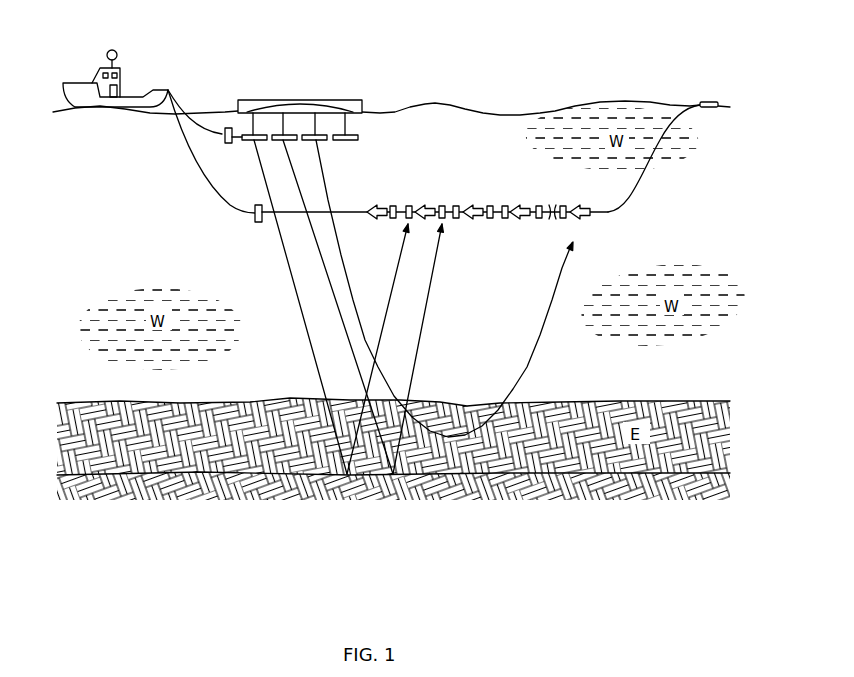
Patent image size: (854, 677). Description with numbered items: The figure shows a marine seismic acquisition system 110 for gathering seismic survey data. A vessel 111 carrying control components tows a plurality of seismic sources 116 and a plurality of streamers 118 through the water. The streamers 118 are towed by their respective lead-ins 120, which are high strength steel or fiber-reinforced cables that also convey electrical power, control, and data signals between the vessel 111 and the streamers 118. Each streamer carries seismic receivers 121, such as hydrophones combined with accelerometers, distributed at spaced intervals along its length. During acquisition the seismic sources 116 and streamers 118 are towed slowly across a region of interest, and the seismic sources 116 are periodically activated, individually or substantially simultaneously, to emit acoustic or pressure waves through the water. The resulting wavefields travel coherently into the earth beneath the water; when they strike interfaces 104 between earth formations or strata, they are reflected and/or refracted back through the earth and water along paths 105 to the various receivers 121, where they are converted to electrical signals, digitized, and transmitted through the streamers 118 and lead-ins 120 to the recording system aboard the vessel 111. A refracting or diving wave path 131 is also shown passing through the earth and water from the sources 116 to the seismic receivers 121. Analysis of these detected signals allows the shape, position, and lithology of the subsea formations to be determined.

The interfaces 104 is at (562, 403).
The paths 105 is at (425, 293).
The marine seismic acquisition system 110 is at (544, 46).
The vessel 111 is at (80, 82).
The seismic sources 116 is at (323, 140).
The streamers 118 is at (493, 218).
The lead-ins 120 is at (195, 162).
The seismic receivers 121 is at (440, 206).
The refracting or diving wave path 131 is at (527, 368).